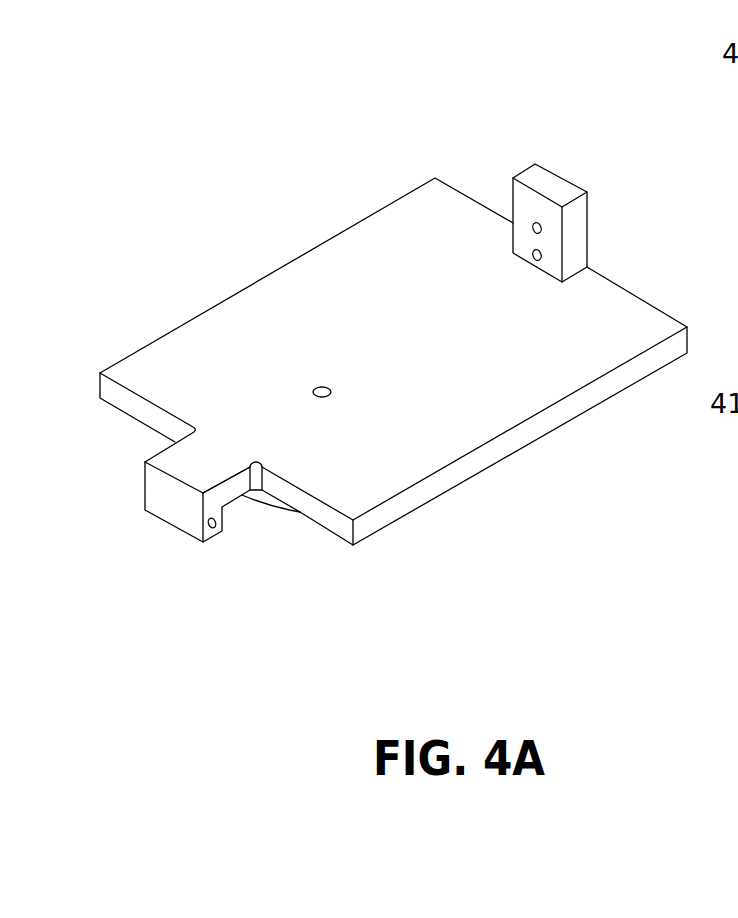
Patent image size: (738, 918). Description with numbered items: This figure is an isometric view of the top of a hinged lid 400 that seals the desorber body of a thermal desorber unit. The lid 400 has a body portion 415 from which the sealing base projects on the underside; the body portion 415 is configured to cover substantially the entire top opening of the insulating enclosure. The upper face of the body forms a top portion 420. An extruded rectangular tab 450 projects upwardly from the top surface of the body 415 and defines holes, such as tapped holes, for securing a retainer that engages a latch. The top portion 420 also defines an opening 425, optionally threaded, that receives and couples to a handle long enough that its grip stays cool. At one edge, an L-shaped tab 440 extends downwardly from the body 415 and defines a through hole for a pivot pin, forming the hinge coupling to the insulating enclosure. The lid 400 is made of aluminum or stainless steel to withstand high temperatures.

The lid 400 is at (478, 120).
The body portion 415 is at (220, 305).
The top portion 420 is at (455, 332).
The opening 425 is at (327, 400).
The tab 440 is at (178, 533).
The rectangular tab 450 is at (585, 242).